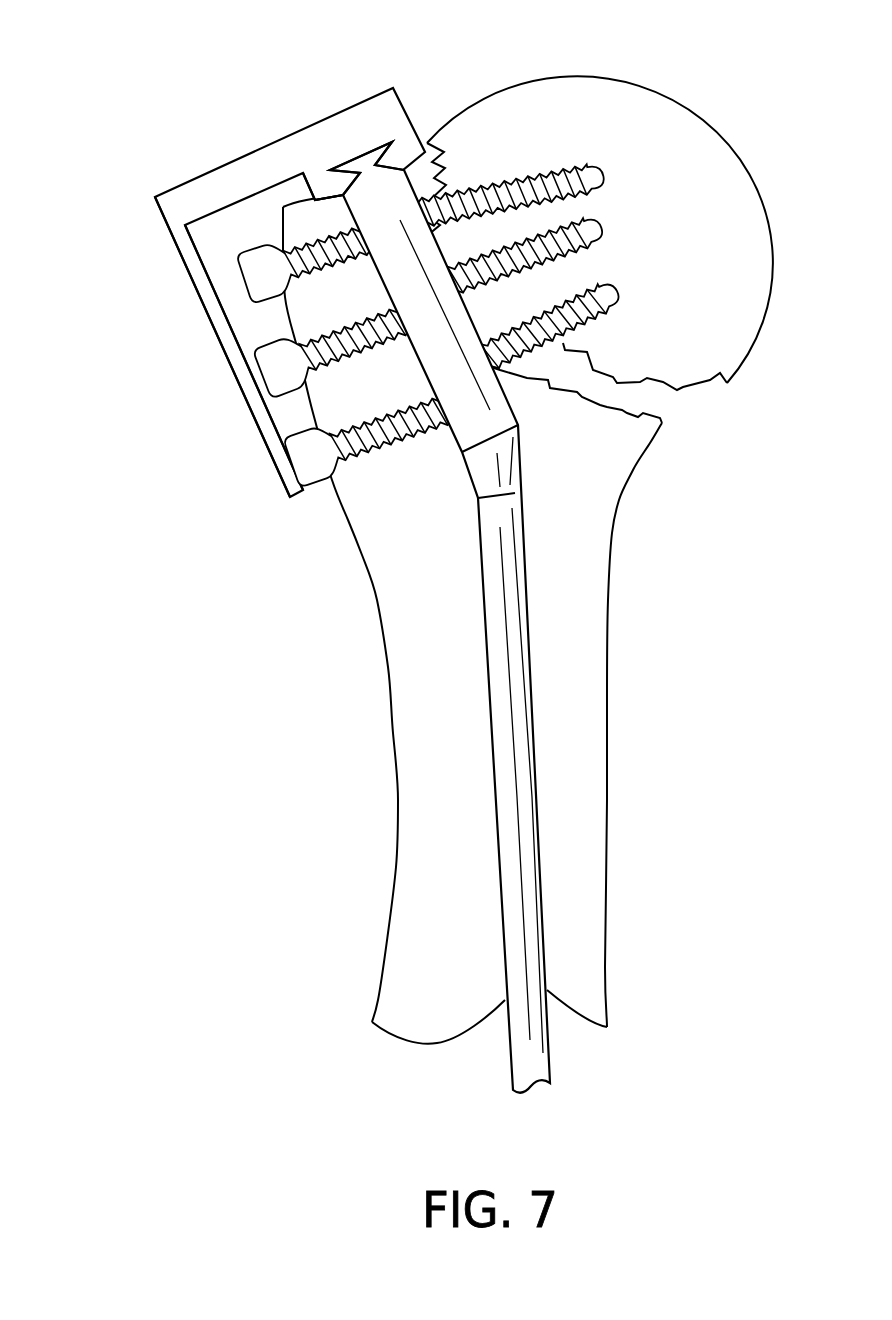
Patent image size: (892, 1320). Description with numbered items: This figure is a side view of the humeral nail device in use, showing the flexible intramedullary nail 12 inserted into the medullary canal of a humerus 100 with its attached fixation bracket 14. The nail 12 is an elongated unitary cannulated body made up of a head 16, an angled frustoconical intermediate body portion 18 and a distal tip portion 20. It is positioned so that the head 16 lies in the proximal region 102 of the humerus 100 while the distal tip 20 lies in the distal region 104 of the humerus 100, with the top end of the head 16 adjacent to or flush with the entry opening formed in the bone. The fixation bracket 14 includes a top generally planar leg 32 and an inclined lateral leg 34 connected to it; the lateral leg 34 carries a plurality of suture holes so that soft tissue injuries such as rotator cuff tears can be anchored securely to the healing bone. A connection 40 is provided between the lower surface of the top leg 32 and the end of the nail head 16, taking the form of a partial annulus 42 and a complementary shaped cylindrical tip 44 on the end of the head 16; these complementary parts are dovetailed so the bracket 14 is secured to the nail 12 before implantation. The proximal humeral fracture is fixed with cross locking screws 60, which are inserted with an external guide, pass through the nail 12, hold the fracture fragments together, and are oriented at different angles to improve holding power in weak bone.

The flexible intramedullary nail 12 is at (502, 740).
The fixation bracket 14 is at (348, 126).
The head 16 is at (390, 190).
The angled frustoconical intermediate body portion 18 is at (503, 462).
The distal tip portion 20 is at (523, 887).
The top leg 32 is at (197, 193).
The lateral leg 34 is at (203, 283).
The connection 40 is at (340, 161).
The partial annulus 42 is at (300, 194).
The cylindrical tip 44 is at (390, 190).
The cross locking screws 60 is at (282, 367).
The humerus 100 is at (577, 618).
The proximal region 102 is at (410, 557).
The distal region 104 is at (580, 722).